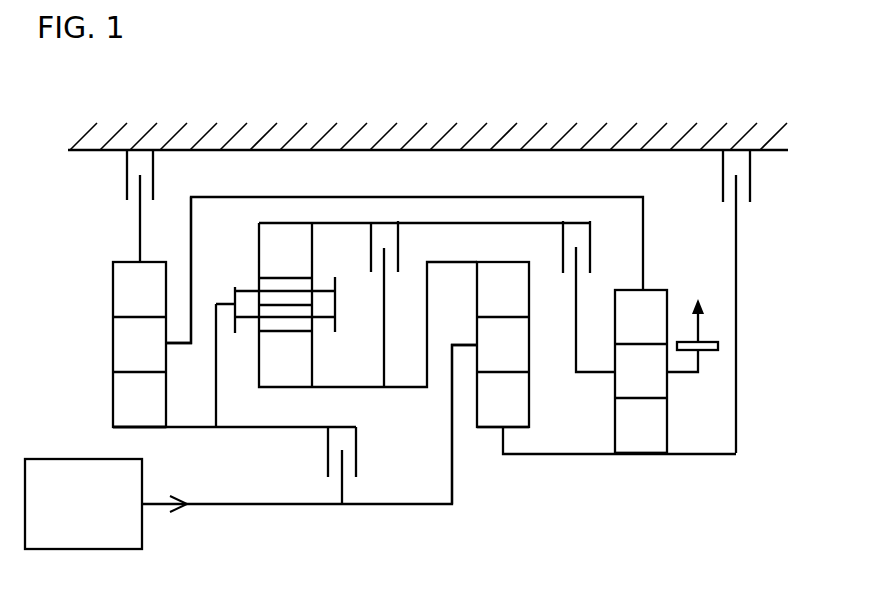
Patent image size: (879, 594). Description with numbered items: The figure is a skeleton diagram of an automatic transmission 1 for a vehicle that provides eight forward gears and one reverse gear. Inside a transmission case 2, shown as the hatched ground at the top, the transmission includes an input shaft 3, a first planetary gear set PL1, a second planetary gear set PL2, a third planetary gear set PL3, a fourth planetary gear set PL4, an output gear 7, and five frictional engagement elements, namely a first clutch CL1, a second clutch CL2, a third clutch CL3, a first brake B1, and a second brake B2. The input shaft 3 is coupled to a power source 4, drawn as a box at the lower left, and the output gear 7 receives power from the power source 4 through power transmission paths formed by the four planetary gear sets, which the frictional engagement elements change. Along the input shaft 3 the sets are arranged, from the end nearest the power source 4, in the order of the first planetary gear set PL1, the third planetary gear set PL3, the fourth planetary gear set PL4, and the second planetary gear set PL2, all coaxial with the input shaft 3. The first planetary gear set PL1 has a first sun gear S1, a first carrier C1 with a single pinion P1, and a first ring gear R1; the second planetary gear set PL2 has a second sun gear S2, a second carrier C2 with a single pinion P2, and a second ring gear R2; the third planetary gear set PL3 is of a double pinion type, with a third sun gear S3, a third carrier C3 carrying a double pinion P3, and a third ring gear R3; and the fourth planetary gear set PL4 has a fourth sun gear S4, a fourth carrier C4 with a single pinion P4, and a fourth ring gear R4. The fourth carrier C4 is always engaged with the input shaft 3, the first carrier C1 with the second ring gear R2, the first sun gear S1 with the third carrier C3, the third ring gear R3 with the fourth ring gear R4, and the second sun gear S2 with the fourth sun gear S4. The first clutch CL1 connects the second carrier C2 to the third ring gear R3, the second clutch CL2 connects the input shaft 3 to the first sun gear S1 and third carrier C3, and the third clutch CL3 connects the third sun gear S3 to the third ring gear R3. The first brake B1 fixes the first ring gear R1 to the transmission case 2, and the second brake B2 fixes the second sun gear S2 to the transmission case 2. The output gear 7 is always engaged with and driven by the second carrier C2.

The automatic transmission 1 is at (584, 117).
The transmission case 2 is at (297, 133).
The input shaft 3 is at (258, 506).
The power source 4 is at (83, 459).
The output gear 7 is at (708, 351).
The first brake B1 is at (127, 186).
The second brake B2 is at (751, 191).
The first planetary gear set PL1 is at (111, 259).
The second planetary gear set PL2 is at (661, 280).
The third planetary gear set PL3 is at (289, 219).
The fourth planetary gear set PL4 is at (484, 257).
The first ring gear R1 is at (113, 290).
The single pinion P1 is at (113, 342).
The first sun gear S1 is at (113, 395).
The first carrier C1 is at (178, 344).
The second ring gear R2 is at (628, 290).
The single pinion P2 is at (615, 388).
The second sun gear S2 is at (615, 434).
The second carrier C2 is at (683, 373).
The third ring gear R3 is at (259, 243).
The double pinion P3 is at (313, 281).
The third sun gear S3 is at (259, 369).
The third carrier C3 is at (235, 287).
The fourth ring gear R4 is at (529, 291).
The single pinion P4 is at (529, 343).
The fourth sun gear S4 is at (529, 408).
The fourth carrier C4 is at (462, 344).
The first clutch CL1 is at (563, 245).
The second clutch CL2 is at (357, 441).
The third clutch CL3 is at (398, 243).